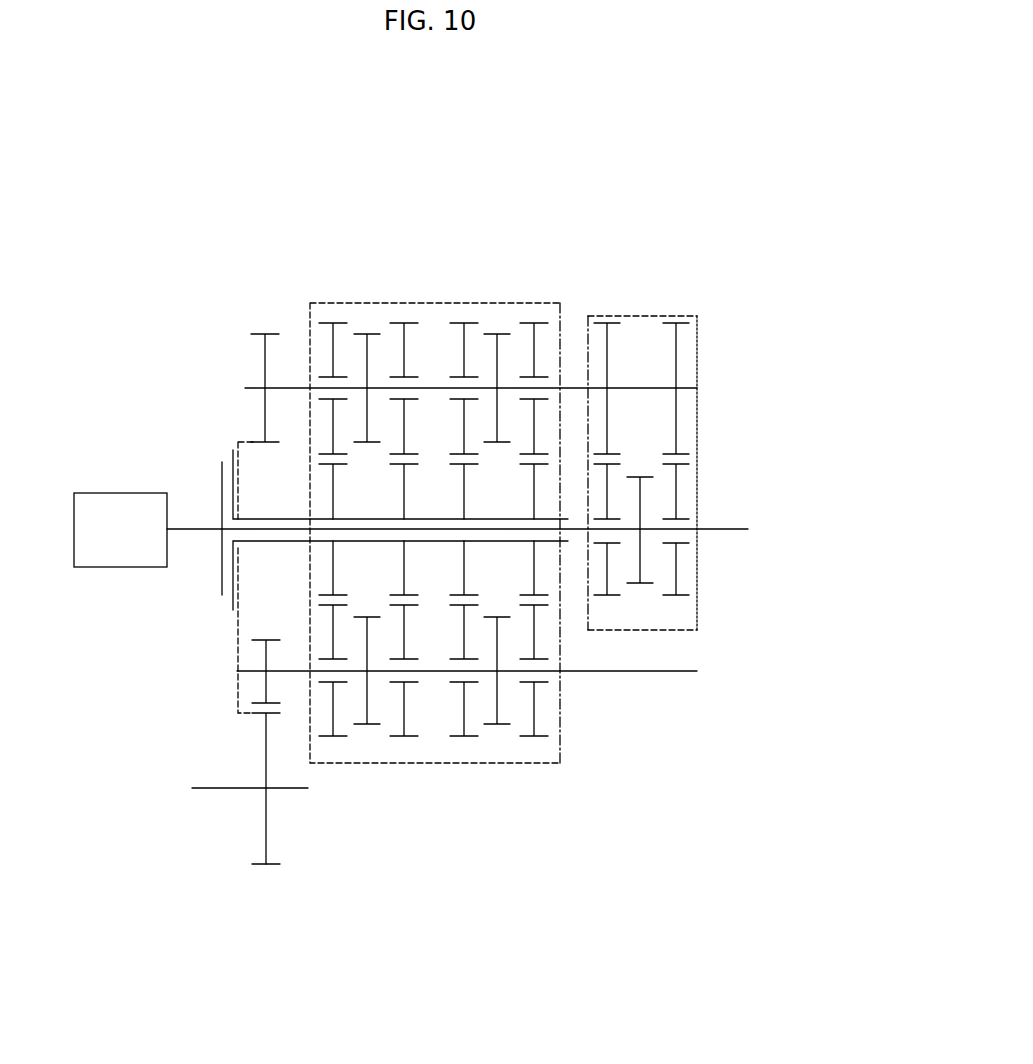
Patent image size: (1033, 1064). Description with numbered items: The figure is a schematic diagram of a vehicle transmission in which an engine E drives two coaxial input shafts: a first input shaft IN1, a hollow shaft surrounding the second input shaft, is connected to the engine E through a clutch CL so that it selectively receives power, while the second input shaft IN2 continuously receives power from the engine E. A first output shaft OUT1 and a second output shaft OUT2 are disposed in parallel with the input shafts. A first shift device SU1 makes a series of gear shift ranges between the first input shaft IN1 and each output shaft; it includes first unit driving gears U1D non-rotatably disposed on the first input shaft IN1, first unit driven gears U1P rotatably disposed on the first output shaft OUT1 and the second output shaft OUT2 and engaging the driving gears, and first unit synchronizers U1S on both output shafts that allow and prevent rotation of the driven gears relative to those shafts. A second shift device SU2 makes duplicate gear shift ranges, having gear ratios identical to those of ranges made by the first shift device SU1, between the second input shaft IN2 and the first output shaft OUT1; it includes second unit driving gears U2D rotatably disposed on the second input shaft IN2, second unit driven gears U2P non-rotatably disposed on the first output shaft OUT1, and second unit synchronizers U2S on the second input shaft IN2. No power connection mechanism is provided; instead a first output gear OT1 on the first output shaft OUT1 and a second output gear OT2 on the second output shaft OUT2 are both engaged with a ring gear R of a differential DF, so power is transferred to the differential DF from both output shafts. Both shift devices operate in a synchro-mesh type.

The engine E is at (120, 493).
The clutch CL is at (222, 458).
The first input shaft IN1 is at (550, 519).
The second input shaft IN2 is at (697, 529).
The first output shaft OUT1 is at (683, 388).
The second output shaft OUT2 is at (670, 671).
The first output gear OT1 is at (265, 334).
The second output gear OT2 is at (262, 640).
The differential DF is at (254, 796).
The ring gear R is at (263, 868).
The first shift device SU1 is at (320, 303).
The second shift device SU2 is at (645, 632).
The first unit driven gears U1P is at (333, 323).
The first unit synchronizers U1S is at (367, 334).
The first unit driving gears U1D is at (404, 464).
The second unit driven gears U2P is at (676, 323).
The second unit synchronizers U2S is at (640, 477).
The second unit driving gears U2D is at (680, 463).